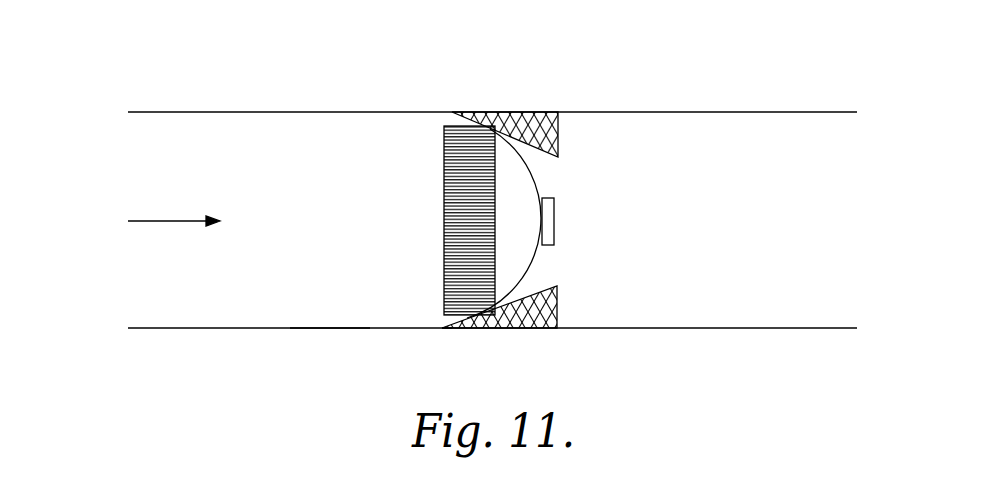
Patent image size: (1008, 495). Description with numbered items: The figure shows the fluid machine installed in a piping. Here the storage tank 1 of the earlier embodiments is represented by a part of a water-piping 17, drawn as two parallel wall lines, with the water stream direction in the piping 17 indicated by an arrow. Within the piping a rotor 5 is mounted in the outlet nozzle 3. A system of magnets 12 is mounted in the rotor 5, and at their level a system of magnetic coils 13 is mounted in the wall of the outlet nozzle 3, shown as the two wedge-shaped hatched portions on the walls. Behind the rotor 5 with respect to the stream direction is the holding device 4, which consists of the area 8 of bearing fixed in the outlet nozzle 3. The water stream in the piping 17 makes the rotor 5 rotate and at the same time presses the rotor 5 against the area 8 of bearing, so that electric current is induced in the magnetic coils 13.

The storage tank 1 is at (205, 295).
The water-piping 17 is at (322, 352).
The rotor 5 is at (497, 222).
The system of magnets 12 is at (462, 146).
The system of magnetic coils 13 is at (537, 127).
The holding device 4 is at (573, 268).
The area of bearing 8 is at (545, 212).
The outlet nozzle 3 is at (446, 326).